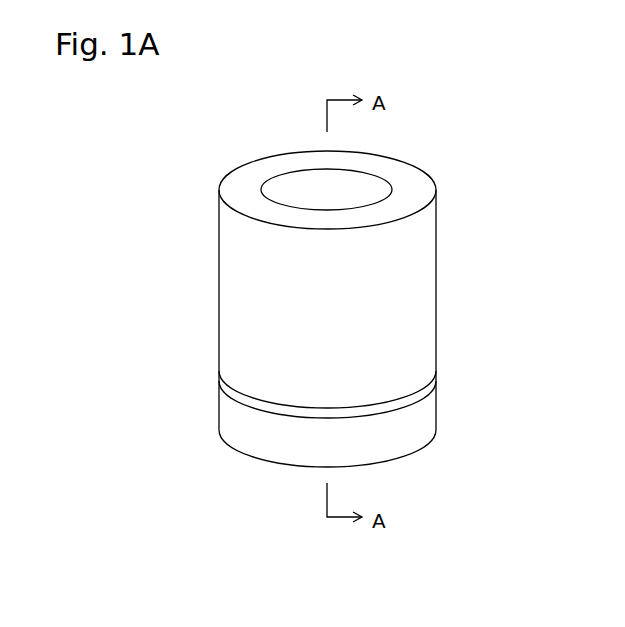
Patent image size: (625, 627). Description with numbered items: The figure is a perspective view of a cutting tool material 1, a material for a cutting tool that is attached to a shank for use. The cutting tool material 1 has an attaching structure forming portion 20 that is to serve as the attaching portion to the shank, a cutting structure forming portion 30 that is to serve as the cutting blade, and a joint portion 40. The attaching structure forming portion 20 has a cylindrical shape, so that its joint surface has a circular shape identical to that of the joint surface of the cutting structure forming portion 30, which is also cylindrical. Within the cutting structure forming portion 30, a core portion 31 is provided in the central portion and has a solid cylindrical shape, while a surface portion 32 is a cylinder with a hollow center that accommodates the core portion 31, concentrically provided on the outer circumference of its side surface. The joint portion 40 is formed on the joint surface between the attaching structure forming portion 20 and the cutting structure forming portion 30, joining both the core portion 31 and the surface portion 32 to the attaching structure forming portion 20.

The cutting tool material 1 is at (440, 122).
The attaching structure forming portion 20 is at (423, 425).
The cutting structure forming portion 30 is at (387, 279).
The core portion 31 is at (360, 189).
The surface portion 32 is at (402, 200).
The joint portion 40 is at (433, 388).